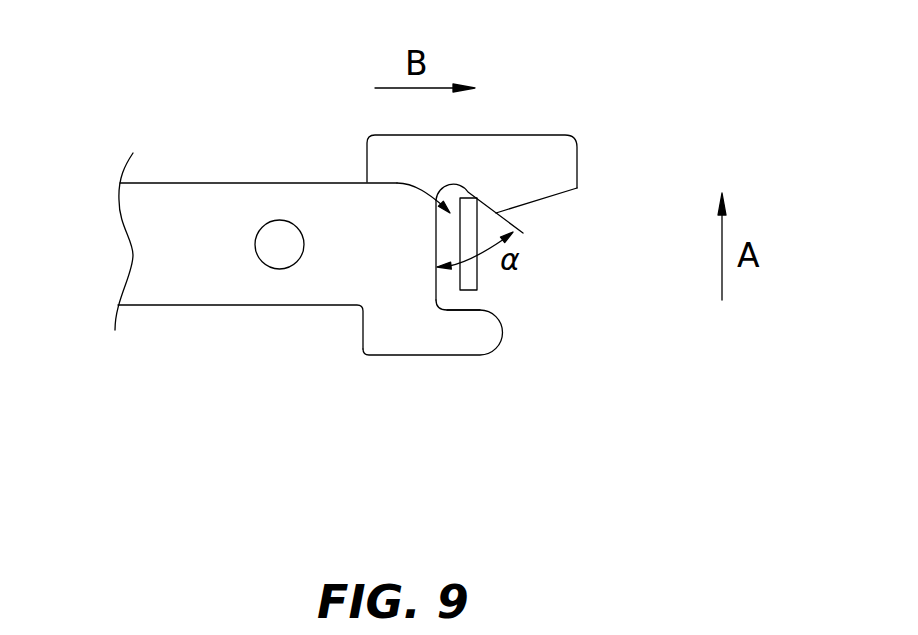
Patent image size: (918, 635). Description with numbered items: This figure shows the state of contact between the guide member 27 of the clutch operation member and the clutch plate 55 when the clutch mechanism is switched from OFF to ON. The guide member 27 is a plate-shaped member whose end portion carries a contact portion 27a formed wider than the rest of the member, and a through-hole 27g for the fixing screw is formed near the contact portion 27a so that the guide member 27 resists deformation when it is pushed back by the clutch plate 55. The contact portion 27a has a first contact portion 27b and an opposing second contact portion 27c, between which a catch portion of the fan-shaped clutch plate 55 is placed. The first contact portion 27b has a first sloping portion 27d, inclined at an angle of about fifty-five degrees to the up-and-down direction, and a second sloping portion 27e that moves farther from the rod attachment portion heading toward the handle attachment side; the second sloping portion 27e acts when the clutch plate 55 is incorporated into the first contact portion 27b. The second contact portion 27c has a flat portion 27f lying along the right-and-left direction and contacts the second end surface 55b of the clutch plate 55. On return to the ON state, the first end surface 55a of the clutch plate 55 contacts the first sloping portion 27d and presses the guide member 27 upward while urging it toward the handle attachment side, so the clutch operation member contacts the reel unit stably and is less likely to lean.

The guide member 27 is at (255, 162).
The contact portion 27a is at (431, 374).
The first contact portion 27b is at (438, 236).
The second contact portion 27c is at (483, 293).
The first sloping portion 27d is at (471, 220).
The second sloping portion 27e is at (522, 208).
The flat portion 27f is at (488, 308).
The through-hole 27g is at (279, 223).
The clutch plate 55 is at (363, 182).
The first end surface 55a is at (469, 190).
The second end surface 55b is at (468, 288).